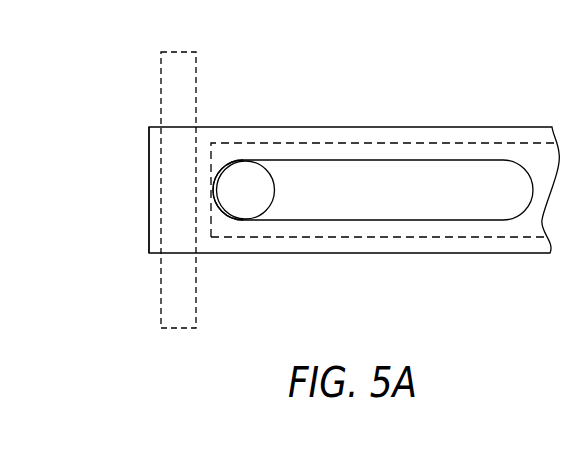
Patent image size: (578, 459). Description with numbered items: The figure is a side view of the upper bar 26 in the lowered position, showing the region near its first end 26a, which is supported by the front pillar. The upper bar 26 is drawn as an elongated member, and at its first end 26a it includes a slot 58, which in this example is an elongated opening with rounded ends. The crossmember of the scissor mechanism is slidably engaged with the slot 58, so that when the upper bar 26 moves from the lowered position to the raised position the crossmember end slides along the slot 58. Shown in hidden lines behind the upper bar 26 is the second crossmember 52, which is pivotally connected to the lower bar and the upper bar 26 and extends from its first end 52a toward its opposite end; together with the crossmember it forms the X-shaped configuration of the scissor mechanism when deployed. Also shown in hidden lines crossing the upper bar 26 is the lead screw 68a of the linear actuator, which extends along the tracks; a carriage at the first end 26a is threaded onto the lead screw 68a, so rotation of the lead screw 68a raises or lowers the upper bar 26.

The upper bar 26 is at (497, 127).
The first end of the upper bar 26a is at (205, 127).
The second crossmember 52 is at (364, 145).
The first end of the second crossmember 52a is at (218, 156).
The slot 58 is at (390, 164).
The lead screw 68a is at (161, 97).